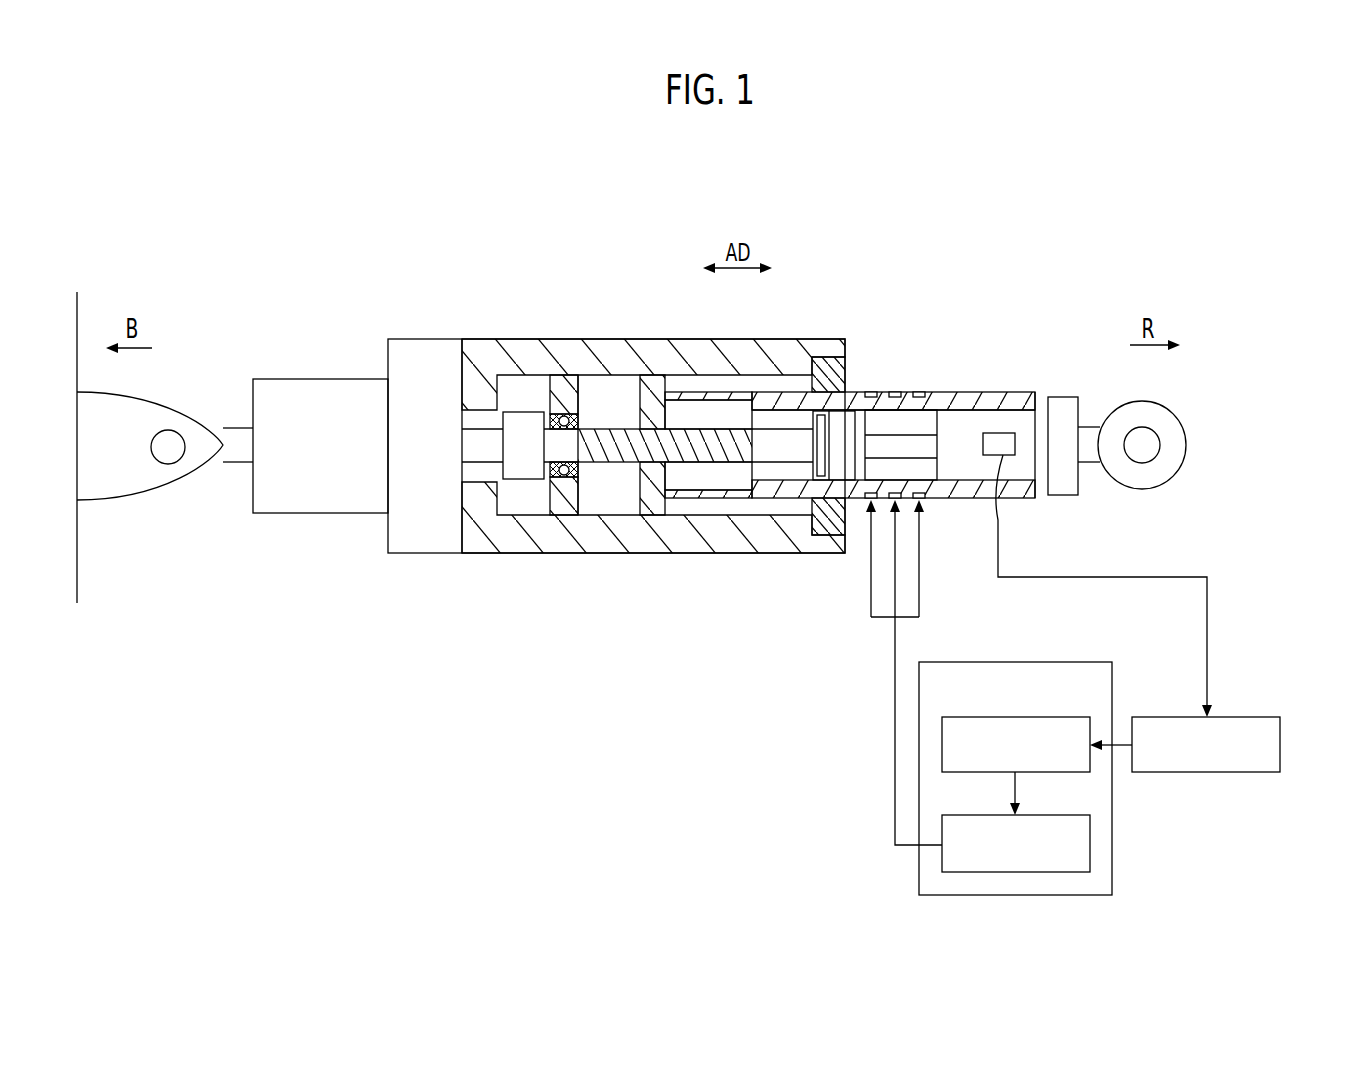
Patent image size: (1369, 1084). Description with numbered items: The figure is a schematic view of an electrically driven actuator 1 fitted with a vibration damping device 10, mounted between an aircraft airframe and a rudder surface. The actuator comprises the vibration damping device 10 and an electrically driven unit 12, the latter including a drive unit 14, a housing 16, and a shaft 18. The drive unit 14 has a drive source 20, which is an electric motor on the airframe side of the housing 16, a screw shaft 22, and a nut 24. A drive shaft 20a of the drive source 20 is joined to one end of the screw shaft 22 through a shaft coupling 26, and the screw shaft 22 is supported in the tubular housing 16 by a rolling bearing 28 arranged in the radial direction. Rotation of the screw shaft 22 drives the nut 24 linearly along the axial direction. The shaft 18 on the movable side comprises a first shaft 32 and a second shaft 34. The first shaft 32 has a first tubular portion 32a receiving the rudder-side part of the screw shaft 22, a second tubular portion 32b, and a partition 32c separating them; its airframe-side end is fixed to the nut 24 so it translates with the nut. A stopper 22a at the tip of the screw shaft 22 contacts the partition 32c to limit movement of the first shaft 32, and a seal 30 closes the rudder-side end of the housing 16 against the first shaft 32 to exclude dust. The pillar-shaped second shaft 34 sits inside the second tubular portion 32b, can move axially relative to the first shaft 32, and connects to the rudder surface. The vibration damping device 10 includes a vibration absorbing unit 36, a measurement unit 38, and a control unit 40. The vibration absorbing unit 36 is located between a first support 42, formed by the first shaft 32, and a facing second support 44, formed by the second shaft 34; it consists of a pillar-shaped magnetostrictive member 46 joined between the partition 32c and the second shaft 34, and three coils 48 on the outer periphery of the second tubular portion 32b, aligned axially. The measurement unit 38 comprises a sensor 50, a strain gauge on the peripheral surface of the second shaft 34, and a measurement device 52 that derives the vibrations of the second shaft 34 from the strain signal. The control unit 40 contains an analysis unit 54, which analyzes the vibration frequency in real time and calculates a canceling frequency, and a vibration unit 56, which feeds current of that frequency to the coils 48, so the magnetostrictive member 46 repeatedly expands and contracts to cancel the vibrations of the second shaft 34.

The electrically driven actuator 1 is at (719, 397).
The vibration damping device 10 is at (1096, 681).
The electrically driven unit 12 is at (719, 408).
The drive unit 14 is at (554, 477).
The housing 16 is at (640, 353).
The shaft 18 is at (925, 378).
The drive source 20 is at (355, 502).
The drive shaft 20a is at (483, 442).
The screw shaft 22 is at (716, 507).
The stopper 22a is at (819, 468).
The nut 24 is at (653, 503).
The shaft coupling 26 is at (525, 420).
The rolling bearing 28 is at (572, 407).
The seal 30 is at (828, 483).
The first shaft 32 is at (850, 433).
The first support 42 is at (850, 448).
The first tubular portion 32a is at (775, 393).
The second tubular portion 32b is at (980, 395).
The partition 32c is at (863, 421).
The second shaft 34 is at (1101, 376).
The second support 44 is at (1044, 430).
The vibration absorbing unit 36 is at (915, 384).
The magnetostrictive member 46 is at (920, 445).
The coil 48 is at (895, 411).
The measurement unit 38 is at (1155, 603).
The sensor 50 is at (1007, 457).
The measurement device 52 is at (1247, 717).
The control unit 40 is at (1025, 761).
The analysis unit 54 is at (1053, 717).
The vibration unit 56 is at (1032, 815).